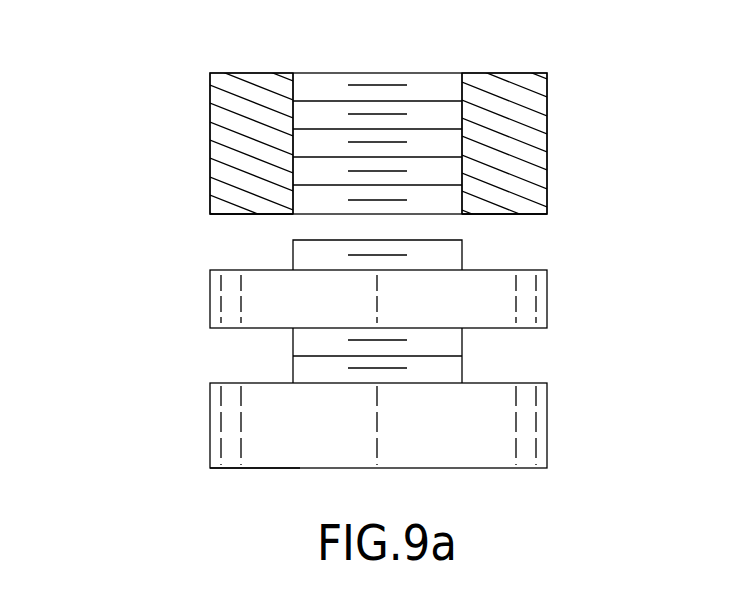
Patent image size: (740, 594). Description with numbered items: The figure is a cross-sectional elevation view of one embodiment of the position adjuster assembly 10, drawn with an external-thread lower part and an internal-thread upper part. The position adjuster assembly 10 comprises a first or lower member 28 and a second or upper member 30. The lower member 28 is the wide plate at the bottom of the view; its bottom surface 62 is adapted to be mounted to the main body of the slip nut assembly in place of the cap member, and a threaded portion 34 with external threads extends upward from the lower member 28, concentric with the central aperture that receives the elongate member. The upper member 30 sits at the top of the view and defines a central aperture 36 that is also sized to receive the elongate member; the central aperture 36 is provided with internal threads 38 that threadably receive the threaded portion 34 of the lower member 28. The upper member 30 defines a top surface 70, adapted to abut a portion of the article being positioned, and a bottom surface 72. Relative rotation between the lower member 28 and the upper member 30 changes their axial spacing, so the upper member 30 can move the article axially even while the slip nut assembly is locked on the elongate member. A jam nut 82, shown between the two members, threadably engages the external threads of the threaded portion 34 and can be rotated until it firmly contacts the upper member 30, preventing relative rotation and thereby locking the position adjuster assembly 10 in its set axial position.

The position adjuster assembly 10 is at (112, 75).
The second or upper member 30 is at (561, 126).
The top surface 70 is at (233, 73).
The bottom surface 72 is at (221, 214).
The internal threads 38 is at (462, 88).
The central aperture 36 is at (461, 197).
The jam nut 82 is at (562, 300).
The threaded portion 34 is at (293, 342).
The first or lower member 28 is at (562, 429).
The bottom surface 62 is at (240, 468).